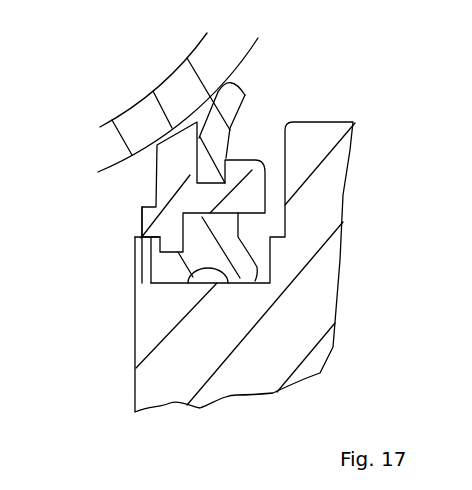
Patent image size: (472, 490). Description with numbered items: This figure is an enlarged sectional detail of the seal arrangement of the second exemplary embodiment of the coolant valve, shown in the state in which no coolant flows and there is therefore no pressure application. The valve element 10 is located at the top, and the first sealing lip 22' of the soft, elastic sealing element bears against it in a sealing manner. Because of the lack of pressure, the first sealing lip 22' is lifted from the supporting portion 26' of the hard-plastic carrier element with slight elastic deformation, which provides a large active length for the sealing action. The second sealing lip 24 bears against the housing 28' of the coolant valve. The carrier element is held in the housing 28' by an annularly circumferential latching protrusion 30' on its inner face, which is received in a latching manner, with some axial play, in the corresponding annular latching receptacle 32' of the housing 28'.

The valve element 10 is at (128, 127).
The first sealing lip 22' is at (254, 106).
The supporting portion 26' is at (149, 187).
The latching protrusion 30' is at (91, 253).
The latching receptacle 32' is at (90, 292).
The second sealing lip 24 is at (171, 254).
The housing 28' is at (280, 267).